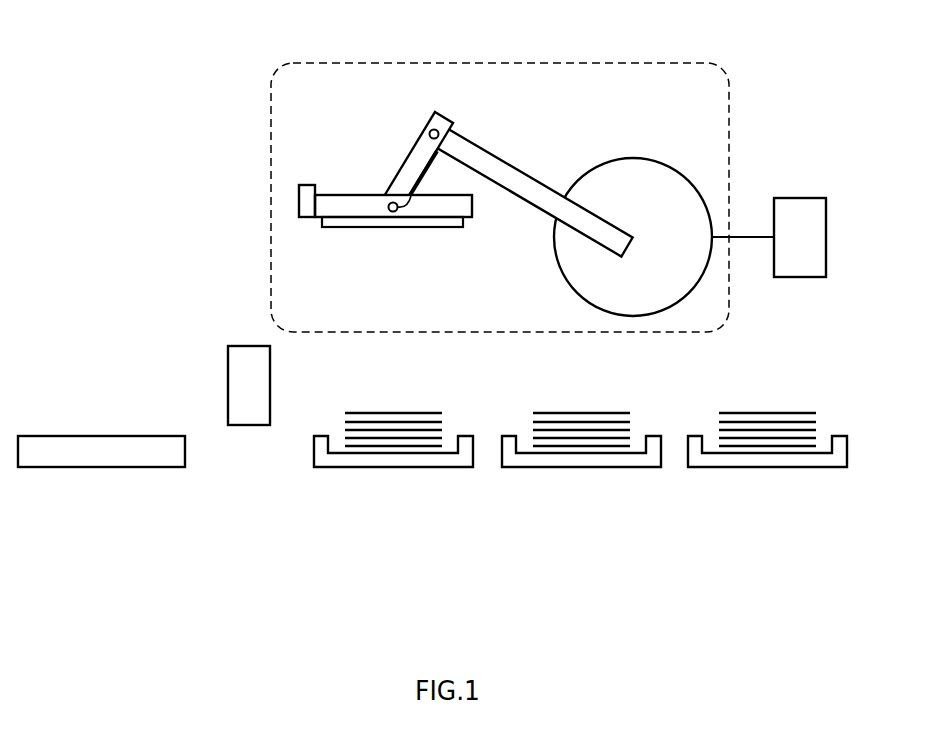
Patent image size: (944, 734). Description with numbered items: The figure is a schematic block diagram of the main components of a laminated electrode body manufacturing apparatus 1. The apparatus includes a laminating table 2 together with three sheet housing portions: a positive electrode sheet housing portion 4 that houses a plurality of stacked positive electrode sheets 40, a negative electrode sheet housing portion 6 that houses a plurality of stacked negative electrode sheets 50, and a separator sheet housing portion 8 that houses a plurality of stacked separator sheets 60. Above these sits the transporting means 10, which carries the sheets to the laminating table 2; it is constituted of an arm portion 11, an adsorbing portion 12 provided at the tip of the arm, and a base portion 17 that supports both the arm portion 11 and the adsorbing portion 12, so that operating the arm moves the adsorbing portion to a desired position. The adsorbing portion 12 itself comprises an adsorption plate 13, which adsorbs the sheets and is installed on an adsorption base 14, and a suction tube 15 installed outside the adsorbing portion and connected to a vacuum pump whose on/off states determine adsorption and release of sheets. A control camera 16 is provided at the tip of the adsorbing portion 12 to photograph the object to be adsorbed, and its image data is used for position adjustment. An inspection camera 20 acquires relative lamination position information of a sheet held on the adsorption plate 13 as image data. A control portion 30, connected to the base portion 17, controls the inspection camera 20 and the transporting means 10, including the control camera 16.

The laminated electrode body manufacturing apparatus 1 is at (180, 32).
The transporting means 10 is at (349, 102).
The arm portion 11 is at (497, 153).
The adsorbing portion 12 is at (398, 220).
The adsorption plate 13 is at (368, 223).
The adsorption base 14 is at (471, 197).
The suction tube 15 is at (413, 200).
The control camera 16 is at (307, 185).
The base portion 17 is at (655, 165).
The control portion 30 is at (826, 248).
The inspection camera 20 is at (228, 377).
The laminating table 2 is at (130, 457).
The positive electrode sheet housing portion 4 is at (420, 460).
The positive electrode sheet 40 is at (425, 413).
The negative electrode sheet housing portion 6 is at (608, 460).
The negative electrode sheet 50 is at (613, 413).
The separator sheet housing portion 8 is at (795, 460).
The separator sheet 60 is at (800, 413).